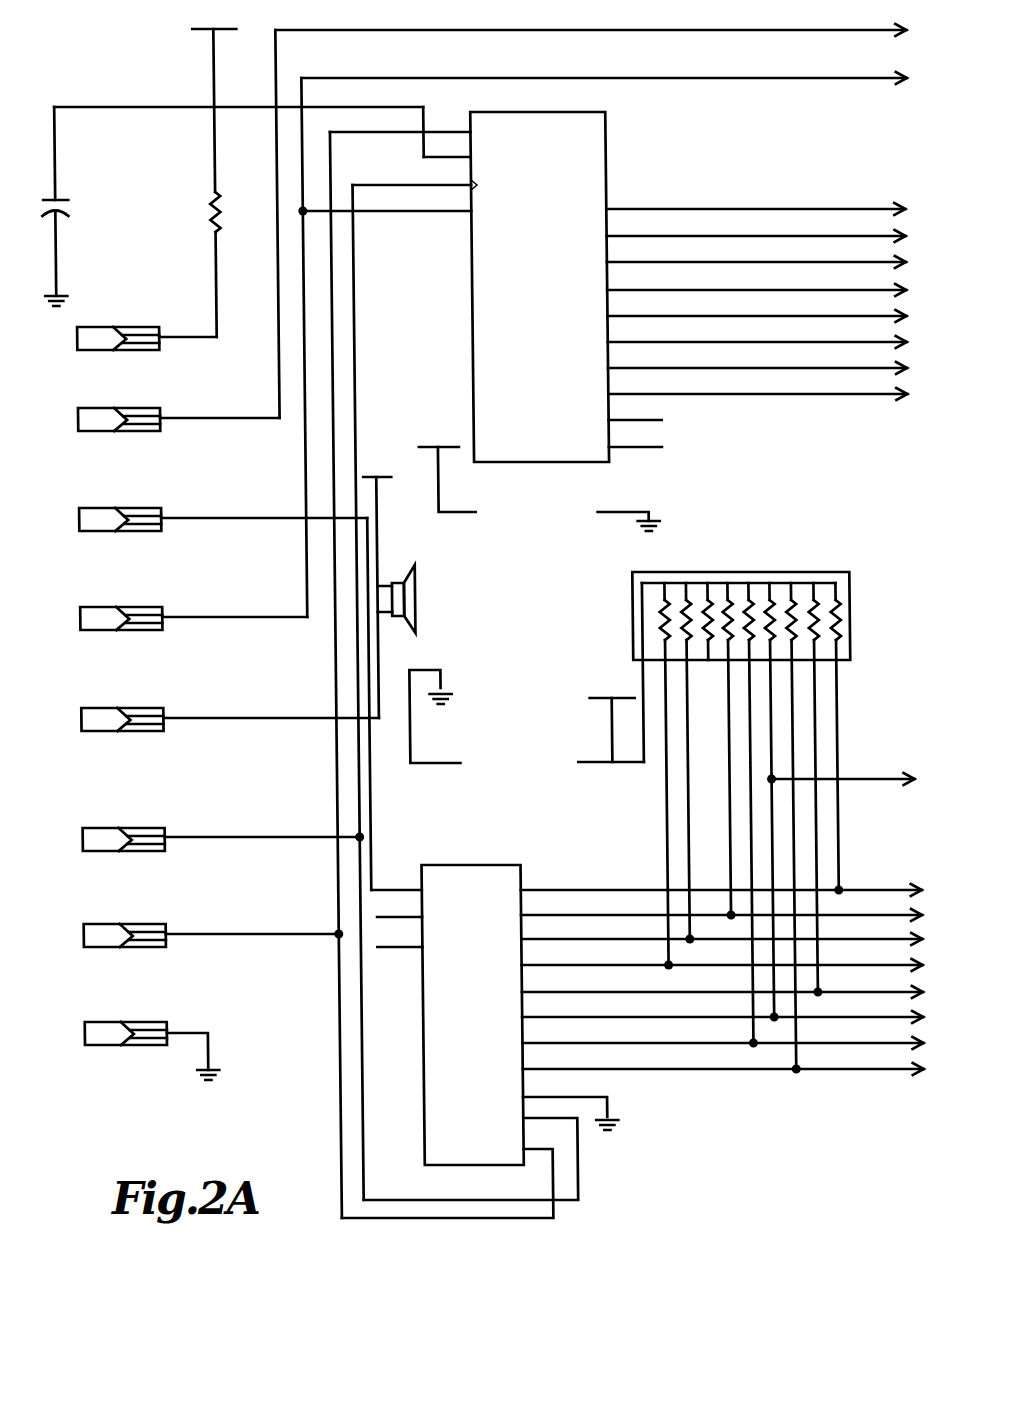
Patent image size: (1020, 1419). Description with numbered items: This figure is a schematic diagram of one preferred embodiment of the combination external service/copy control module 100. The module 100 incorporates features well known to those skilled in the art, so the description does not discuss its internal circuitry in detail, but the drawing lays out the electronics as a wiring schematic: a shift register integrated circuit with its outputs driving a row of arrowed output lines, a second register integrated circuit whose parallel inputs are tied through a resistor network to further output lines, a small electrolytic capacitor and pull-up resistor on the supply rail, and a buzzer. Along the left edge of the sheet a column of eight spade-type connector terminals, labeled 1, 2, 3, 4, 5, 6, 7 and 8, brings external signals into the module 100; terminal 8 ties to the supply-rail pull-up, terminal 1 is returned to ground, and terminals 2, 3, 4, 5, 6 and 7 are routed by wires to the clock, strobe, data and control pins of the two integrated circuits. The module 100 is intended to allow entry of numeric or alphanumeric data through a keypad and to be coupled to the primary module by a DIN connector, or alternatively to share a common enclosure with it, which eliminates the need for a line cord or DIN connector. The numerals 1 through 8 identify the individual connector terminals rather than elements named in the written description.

The external service/copy control module 100 is at (482, 618).
The connector pin 1 is at (147, 1039).
The connector pin 2 is at (210, 928).
The connector pin 3 is at (220, 832).
The connector pin 4 is at (230, 712).
The connector pin 5 is at (193, 611).
The connector pin 6 is at (223, 512).
The connector pin 7 is at (179, 412).
The connector pin 8 is at (147, 331).